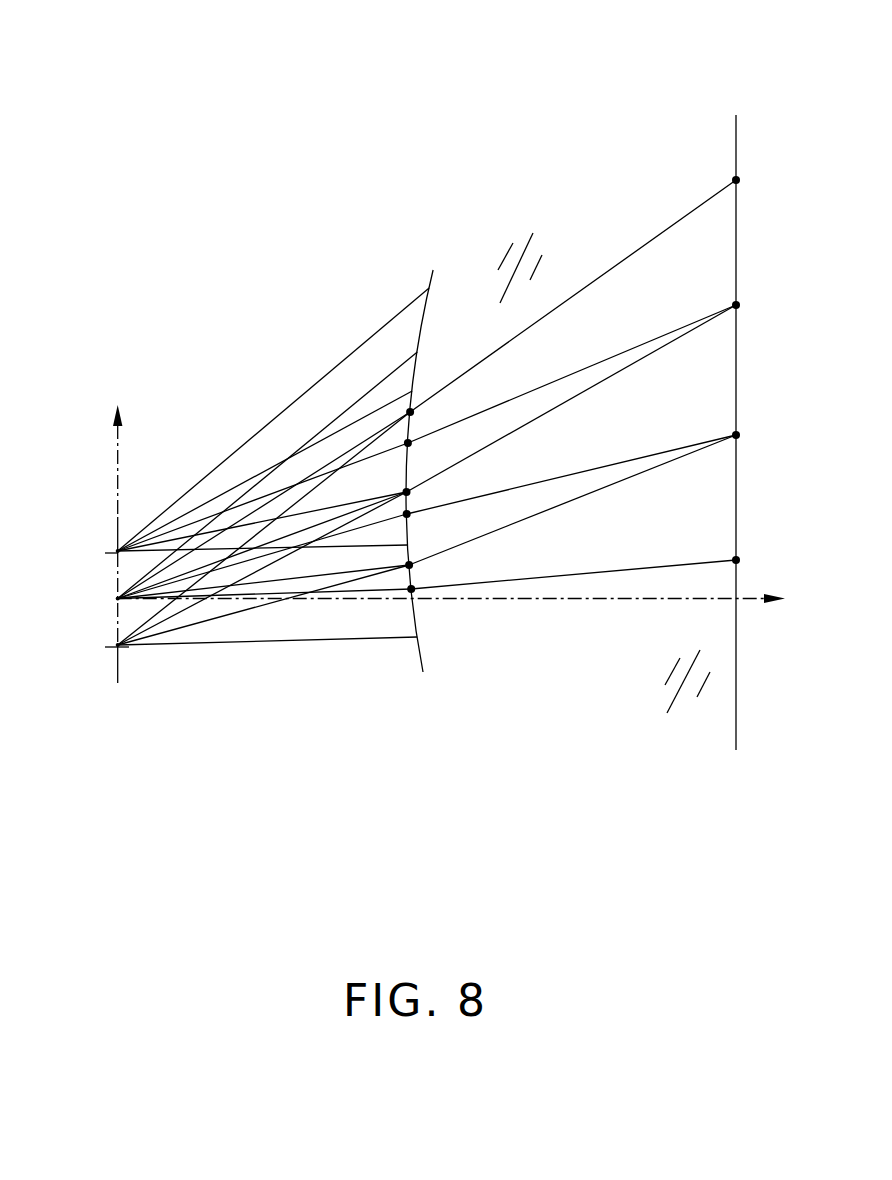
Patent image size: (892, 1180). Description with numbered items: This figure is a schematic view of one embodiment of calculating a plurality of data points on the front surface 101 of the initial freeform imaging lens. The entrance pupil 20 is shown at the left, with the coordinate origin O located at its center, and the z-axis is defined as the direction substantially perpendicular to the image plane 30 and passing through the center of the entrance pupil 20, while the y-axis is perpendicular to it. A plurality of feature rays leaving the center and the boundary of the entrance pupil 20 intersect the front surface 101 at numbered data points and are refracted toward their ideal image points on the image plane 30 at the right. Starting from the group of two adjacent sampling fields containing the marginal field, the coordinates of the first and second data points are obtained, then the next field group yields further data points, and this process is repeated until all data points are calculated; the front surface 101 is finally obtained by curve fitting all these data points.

The entrance pupil 20 is at (110, 593).
The image plane 30 is at (741, 118).
The front surface 101 is at (433, 272).